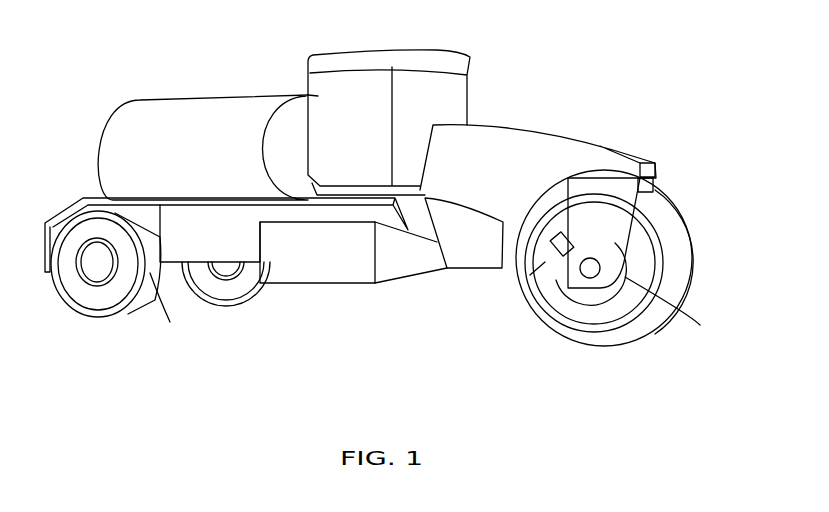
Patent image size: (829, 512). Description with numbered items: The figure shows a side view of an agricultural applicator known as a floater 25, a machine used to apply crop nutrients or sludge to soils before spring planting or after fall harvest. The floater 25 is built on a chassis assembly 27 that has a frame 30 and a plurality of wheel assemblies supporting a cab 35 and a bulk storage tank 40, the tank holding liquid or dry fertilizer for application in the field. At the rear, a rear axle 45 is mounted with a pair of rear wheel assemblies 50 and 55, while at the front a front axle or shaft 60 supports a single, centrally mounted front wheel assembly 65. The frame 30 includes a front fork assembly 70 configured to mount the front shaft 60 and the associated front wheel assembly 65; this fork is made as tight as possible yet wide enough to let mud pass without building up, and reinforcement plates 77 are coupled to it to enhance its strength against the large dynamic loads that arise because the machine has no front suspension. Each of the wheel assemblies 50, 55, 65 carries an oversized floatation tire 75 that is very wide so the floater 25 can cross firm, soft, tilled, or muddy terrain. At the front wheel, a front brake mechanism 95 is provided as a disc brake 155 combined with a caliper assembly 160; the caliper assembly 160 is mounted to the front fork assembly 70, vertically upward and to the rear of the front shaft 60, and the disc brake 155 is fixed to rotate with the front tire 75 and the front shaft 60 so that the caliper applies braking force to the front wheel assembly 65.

The floater 25 is at (643, 129).
The chassis assembly 27 is at (457, 280).
The frame 30 is at (248, 233).
The cab 35 is at (320, 95).
The bulk storage tank 40 is at (200, 164).
The rear axle 45 is at (97, 266).
The rear wheel assembly 50 is at (135, 320).
The rear wheel assembly 55 is at (240, 320).
The front axle or shaft 60 is at (590, 278).
The front wheel assembly 65 is at (655, 346).
The front fork assembly 70 is at (682, 197).
The floatation tire 75 is at (678, 253).
The reinforcement plate 77 is at (558, 289).
The front brake mechanism 95 is at (542, 268).
The disc brake 155 is at (629, 276).
The caliper assembly 160 is at (560, 236).